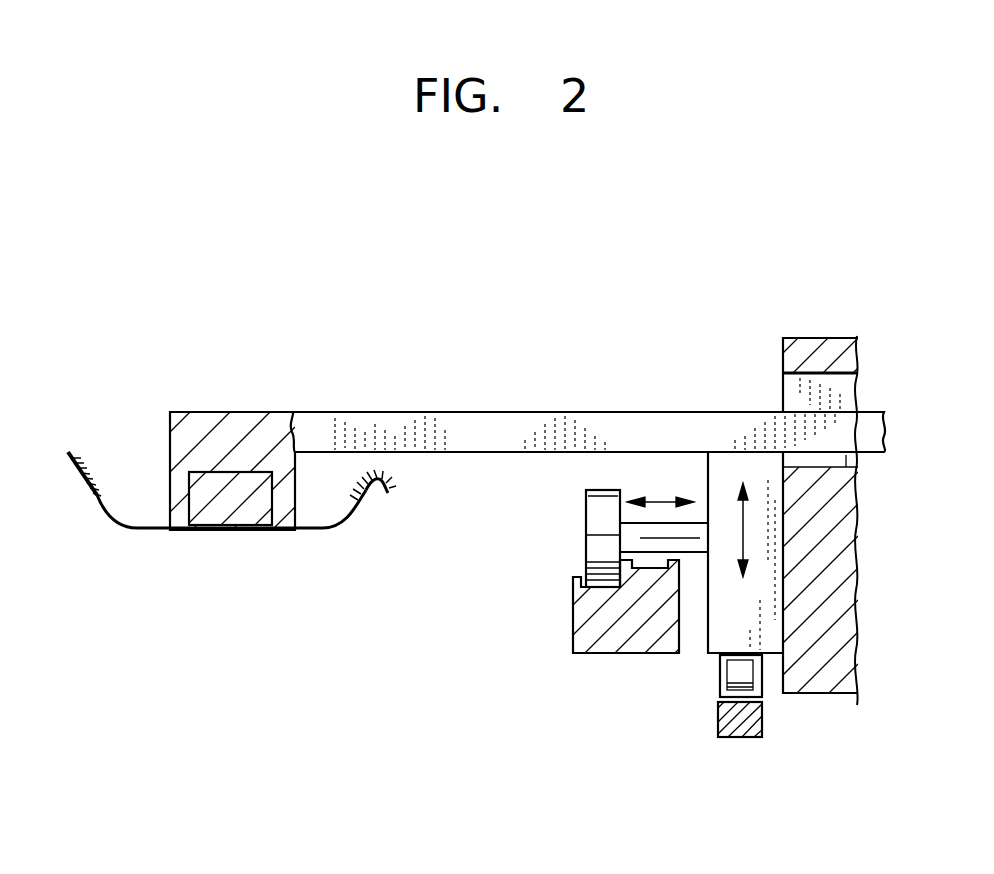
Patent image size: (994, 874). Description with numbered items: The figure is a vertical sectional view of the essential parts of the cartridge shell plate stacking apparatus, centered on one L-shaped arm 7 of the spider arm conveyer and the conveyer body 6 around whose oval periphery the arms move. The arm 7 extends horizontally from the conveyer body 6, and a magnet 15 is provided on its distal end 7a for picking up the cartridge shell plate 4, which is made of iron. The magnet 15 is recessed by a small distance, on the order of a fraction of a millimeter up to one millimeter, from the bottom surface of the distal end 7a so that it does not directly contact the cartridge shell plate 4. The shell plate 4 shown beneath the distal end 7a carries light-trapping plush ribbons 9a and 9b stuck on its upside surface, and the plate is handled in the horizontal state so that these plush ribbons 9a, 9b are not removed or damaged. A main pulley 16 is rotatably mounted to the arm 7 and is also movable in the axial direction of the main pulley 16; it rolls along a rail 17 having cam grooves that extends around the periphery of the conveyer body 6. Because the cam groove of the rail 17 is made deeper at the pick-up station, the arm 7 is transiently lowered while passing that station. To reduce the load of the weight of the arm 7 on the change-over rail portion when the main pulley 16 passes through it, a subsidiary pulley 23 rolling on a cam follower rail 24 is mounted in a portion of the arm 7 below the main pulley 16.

The cartridge shell plate 4 is at (137, 533).
The conveyer body 6 is at (813, 338).
The L-shaped arm 7 is at (480, 400).
The distal end 7a is at (170, 490).
The light-trapping plush ribbon 9a is at (90, 450).
The light-trapping plush ribbon 9b is at (390, 487).
The magnet 15 is at (233, 507).
The main pulley 16 is at (593, 540).
The rail 17 is at (583, 618).
The subsidiary pulley 23 is at (738, 678).
The cam follower rail 24 is at (737, 730).